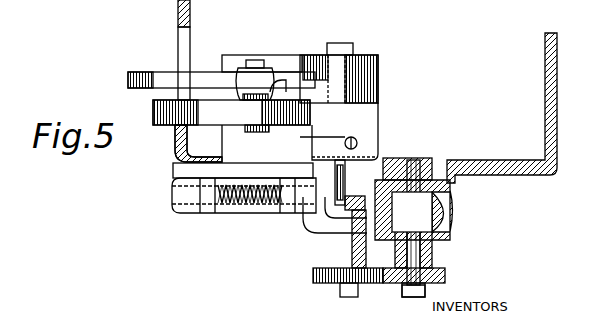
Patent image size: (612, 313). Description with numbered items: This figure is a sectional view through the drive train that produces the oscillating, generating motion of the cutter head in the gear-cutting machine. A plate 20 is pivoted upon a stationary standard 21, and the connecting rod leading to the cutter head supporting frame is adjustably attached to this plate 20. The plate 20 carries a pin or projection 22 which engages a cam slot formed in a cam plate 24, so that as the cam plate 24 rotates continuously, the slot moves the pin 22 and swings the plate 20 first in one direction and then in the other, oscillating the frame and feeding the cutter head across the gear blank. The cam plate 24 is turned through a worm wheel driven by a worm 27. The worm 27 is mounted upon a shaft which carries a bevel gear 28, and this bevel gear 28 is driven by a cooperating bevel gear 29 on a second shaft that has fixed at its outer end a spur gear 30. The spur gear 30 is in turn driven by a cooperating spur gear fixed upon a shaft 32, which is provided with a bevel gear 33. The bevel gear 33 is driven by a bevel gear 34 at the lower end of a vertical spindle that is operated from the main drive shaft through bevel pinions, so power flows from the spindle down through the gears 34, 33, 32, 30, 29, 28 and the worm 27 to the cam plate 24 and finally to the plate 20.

The plate 20 is at (197, 82).
The stationary standard 21 is at (378, 68).
The pin or projection 22 is at (256, 102).
The cam plate 24 is at (231, 112).
The worm 27 is at (232, 206).
The bevel gear 28 is at (366, 160).
The bevel gear 29 is at (320, 220).
The spur gear 30 is at (325, 284).
The shaft 32 is at (432, 262).
The bevel gear 33 is at (442, 194).
The bevel gear 34 is at (422, 289).